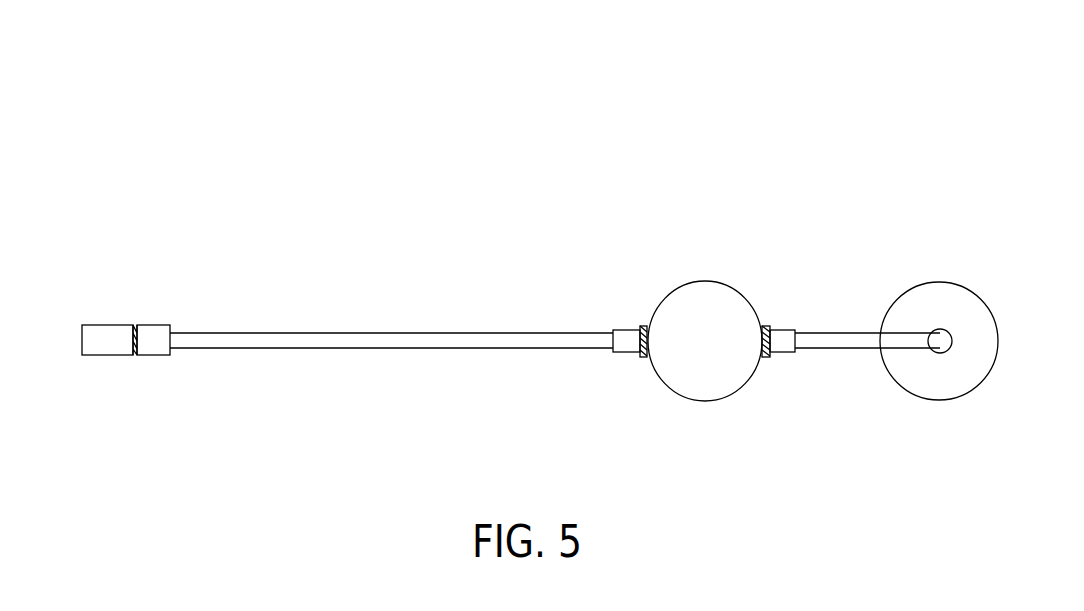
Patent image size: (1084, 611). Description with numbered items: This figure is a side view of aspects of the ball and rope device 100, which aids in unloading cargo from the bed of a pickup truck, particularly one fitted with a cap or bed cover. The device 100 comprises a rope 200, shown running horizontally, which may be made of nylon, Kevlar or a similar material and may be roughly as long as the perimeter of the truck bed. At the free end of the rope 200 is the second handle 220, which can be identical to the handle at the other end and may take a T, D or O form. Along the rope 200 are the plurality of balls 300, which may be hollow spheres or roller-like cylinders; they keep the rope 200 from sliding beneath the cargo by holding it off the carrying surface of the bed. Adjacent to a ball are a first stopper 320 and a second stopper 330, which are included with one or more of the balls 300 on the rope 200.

The ball and rope device 100 is at (264, 148).
The rope 200 is at (419, 313).
The second handle 220 is at (131, 393).
The plurality of balls 300 is at (924, 259).
The first stopper 320 is at (791, 376).
The second stopper 330 is at (623, 377).